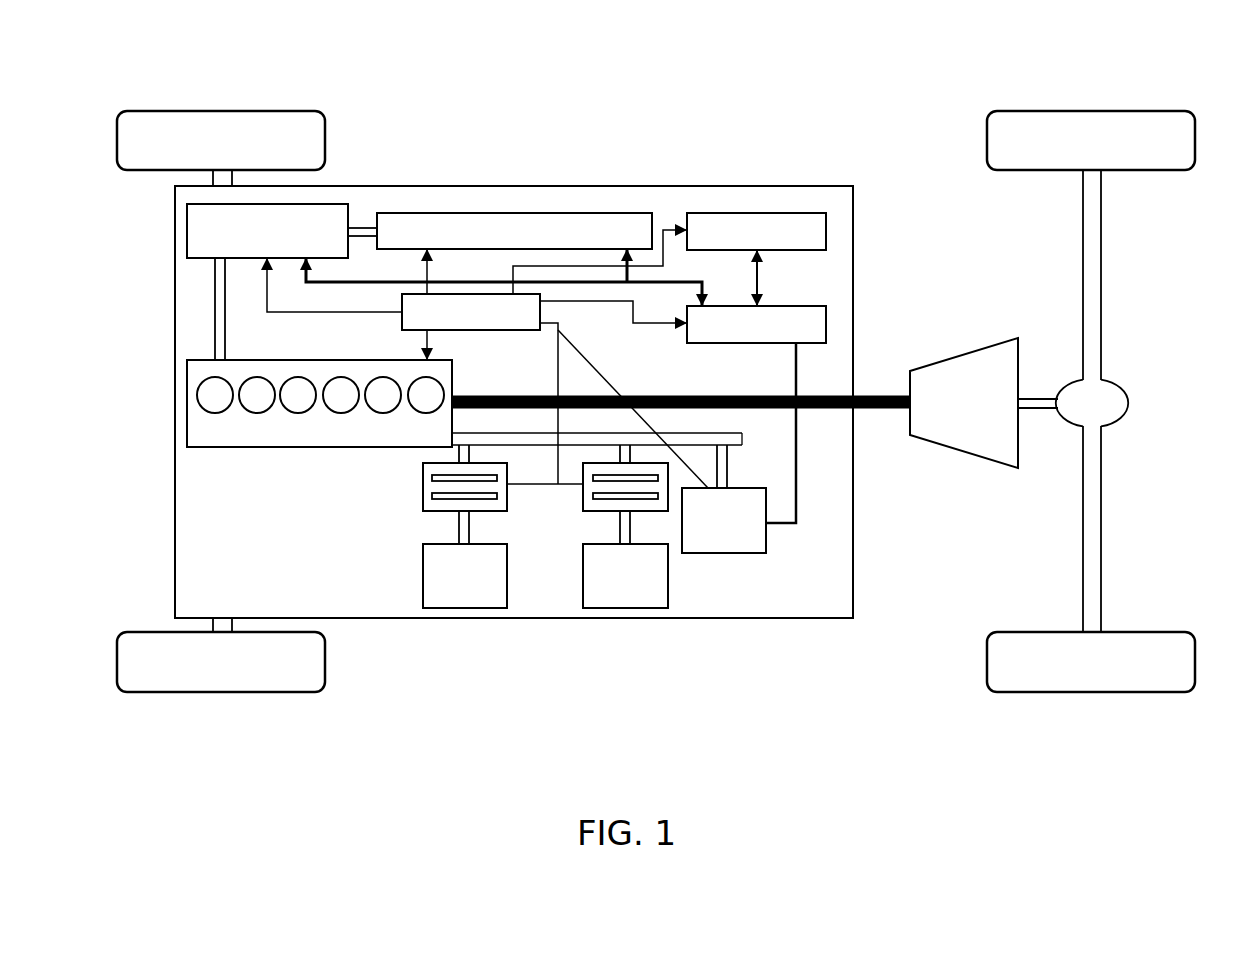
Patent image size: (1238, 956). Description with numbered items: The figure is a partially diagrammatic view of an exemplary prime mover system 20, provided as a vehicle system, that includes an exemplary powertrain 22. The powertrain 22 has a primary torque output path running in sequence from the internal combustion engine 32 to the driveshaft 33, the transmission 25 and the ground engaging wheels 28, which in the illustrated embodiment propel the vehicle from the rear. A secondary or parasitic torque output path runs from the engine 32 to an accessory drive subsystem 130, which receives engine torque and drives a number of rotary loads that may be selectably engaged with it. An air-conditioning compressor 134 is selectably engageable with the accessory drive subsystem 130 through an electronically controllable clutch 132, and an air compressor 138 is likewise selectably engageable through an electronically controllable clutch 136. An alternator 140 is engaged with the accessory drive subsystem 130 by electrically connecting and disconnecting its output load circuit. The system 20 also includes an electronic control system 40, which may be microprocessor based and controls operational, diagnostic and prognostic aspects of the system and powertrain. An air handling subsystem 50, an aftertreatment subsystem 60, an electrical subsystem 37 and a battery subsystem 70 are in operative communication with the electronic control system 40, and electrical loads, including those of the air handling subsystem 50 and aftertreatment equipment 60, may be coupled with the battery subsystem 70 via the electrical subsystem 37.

The prime mover system 20 is at (794, 100).
The powertrain 22 is at (899, 286).
The transmission 25 is at (962, 452).
The ground engaging wheels 28 is at (143, 111).
The internal combustion engine 32 is at (267, 448).
The driveshaft 33 is at (488, 396).
The electrical subsystem 37 is at (717, 344).
The electronic control system 40 is at (402, 320).
The air handling subsystem 50 is at (187, 210).
The aftertreatment subsystem 60 is at (402, 213).
The battery subsystem 70 is at (707, 213).
The accessory drive subsystem 130 is at (742, 440).
The electronically controllable clutch 132 is at (423, 485).
The air-conditioning compressor 134 is at (423, 552).
The electronically controllable clutch 136 is at (583, 488).
The air compressor 138 is at (583, 557).
The alternator 140 is at (765, 553).